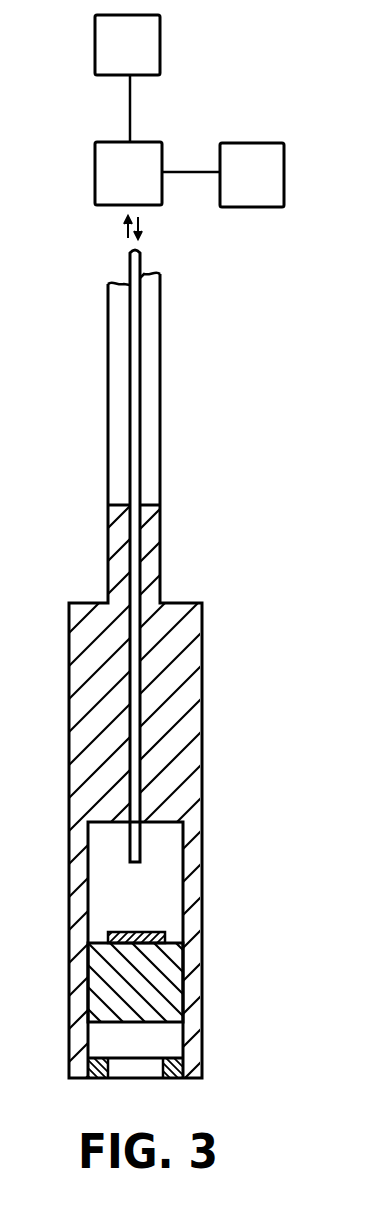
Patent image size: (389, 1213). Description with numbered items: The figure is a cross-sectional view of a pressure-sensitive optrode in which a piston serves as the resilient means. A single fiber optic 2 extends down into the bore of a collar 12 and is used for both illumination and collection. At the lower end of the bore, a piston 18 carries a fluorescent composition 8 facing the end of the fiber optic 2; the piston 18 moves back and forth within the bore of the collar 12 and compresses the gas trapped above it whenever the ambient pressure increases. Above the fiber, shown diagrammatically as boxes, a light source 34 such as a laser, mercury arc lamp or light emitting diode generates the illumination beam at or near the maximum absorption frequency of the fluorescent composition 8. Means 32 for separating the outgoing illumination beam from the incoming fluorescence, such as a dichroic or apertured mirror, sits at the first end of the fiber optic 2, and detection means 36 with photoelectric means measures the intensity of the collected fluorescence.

The fiber optic 2 is at (141, 259).
The fluorescent composition 8 is at (117, 930).
The collar 12 is at (202, 711).
The piston 18 is at (155, 1022).
The means for separating 32 is at (142, 189).
The light source 34 is at (142, 59).
The detection means 36 is at (244, 189).